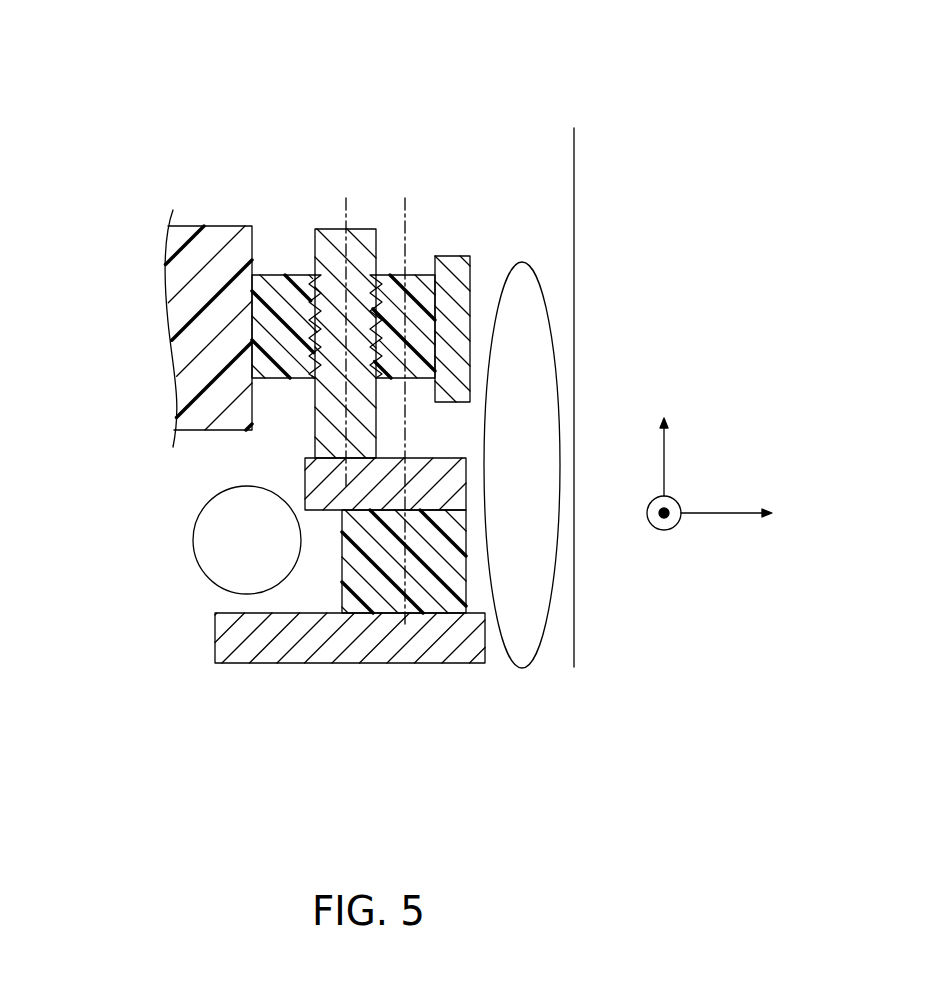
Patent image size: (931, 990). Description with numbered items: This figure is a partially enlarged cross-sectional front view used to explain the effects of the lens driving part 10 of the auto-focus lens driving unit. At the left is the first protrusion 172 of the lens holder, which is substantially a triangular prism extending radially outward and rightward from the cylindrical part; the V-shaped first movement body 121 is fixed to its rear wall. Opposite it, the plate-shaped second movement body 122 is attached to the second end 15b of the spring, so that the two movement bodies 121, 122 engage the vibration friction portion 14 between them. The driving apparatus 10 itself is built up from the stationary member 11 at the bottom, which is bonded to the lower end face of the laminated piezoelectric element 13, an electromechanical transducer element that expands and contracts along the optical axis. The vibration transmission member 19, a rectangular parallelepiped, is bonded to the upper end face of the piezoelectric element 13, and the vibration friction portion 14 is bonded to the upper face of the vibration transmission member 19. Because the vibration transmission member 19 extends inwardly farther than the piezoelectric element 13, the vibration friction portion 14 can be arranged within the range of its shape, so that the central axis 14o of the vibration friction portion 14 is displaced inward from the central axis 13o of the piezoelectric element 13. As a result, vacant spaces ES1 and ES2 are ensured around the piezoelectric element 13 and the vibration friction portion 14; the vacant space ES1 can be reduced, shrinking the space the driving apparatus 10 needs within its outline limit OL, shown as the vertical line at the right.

The lens driving part 10 is at (151, 128).
The first protrusion 172 is at (205, 226).
The first movement body 121 is at (284, 290).
The second movement body 122 is at (422, 292).
The vibration friction portion 14 is at (333, 418).
The central axis of the vibration friction portion 14o is at (346, 215).
The second end of the spring 15b is at (453, 270).
The vibration transmission member 19 is at (305, 483).
The laminated piezoelectric element 13 is at (462, 557).
The central axis of the electromechanical transducer element 13o is at (400, 588).
The stationary member 11 is at (215, 641).
The vacant space ES1 is at (545, 380).
The vacant space ES2 is at (210, 540).
The outline limit OL is at (575, 224).